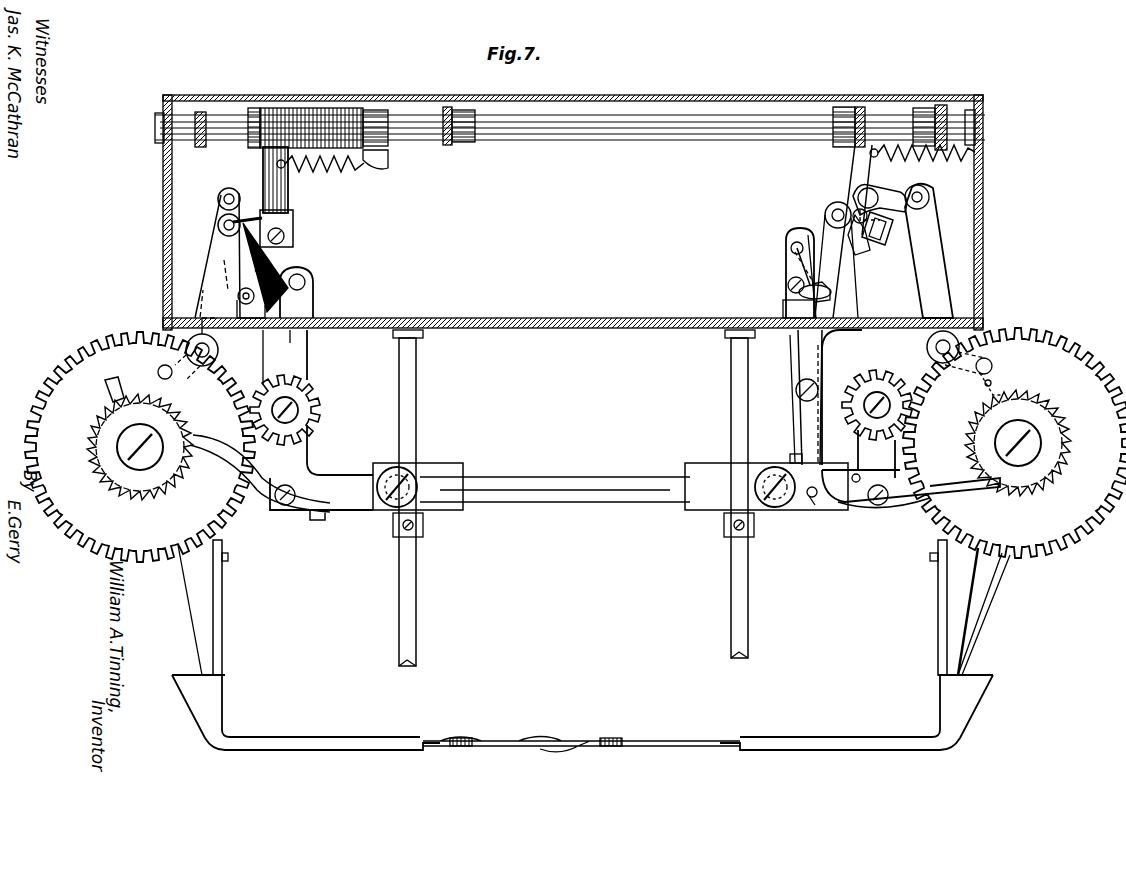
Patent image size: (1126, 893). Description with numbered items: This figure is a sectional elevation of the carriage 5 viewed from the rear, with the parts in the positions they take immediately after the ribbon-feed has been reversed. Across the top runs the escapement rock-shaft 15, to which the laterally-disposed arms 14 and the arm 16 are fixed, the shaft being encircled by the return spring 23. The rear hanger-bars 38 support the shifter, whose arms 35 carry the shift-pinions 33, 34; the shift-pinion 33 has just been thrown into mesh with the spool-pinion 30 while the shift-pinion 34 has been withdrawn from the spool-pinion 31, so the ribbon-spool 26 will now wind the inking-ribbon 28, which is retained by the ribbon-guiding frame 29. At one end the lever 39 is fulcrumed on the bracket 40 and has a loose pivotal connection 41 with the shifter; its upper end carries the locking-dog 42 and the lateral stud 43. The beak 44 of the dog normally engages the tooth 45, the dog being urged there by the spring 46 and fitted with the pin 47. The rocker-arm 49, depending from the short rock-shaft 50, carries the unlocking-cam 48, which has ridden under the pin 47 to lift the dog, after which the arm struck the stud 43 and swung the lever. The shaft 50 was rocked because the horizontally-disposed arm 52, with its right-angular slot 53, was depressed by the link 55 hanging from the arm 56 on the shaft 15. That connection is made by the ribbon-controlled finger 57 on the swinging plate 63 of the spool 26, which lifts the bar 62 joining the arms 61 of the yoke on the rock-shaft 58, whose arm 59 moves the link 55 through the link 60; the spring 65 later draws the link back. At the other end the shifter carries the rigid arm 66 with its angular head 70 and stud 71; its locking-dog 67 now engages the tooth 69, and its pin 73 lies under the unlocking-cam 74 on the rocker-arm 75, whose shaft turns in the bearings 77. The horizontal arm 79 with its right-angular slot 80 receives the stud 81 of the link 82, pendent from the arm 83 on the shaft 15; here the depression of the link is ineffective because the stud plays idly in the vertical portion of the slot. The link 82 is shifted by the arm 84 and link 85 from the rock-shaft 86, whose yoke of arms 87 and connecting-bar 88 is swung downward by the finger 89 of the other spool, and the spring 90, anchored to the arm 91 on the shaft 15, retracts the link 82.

The carriage 5 is at (573, 212).
The laterally-disposed arms 14 is at (198, 148).
The rock-shaft 15 is at (620, 128).
The arm 16 is at (447, 146).
The spring 23 is at (318, 108).
The ribbon-spool 26 is at (990, 615).
The inking-ribbon 28 is at (572, 752).
The ribbon-guiding frame 29 is at (792, 737).
The spool-pinion 30 is at (1014, 435).
The spool-pinion 31 is at (95, 338).
The shift-pinion 33 is at (887, 375).
The shift-pinion 34 is at (320, 412).
The arms 35 is at (310, 453).
The rear hanger-bars 38 is at (418, 425).
The lever 39 is at (800, 413).
The bracket 40 is at (795, 358).
The pivotal connection 41 is at (810, 508).
The locking-dog 42 is at (786, 288).
The lateral stud 43 is at (790, 270).
The beak 44 is at (832, 291).
The tooth 45 is at (850, 331).
The spring 46 is at (790, 252).
The laterally-extending pin 47 is at (812, 282).
The unlocking-cam 48 is at (788, 336).
The rocker-arm 49 is at (828, 225).
The rock-shaft 50 is at (834, 208).
The horizontally-disposed arm 52 is at (870, 246).
The right-angular slot 53 is at (885, 228).
The link 55 is at (860, 168).
The arm 56 is at (866, 142).
The ribbon-controlled finger 57 is at (980, 380).
The rock-shaft 58 is at (927, 340).
The arm 59 is at (925, 228).
The link 60 is at (890, 196).
The arms 61 is at (985, 345).
The bar 62 is at (992, 360).
The swinging plate 63 is at (90, 433).
The spring 65 is at (922, 162).
The vertically-disposed arm 66 is at (308, 352).
The locking-dog 67 is at (316, 298).
The tooth 69 is at (254, 357).
The angular head 70 is at (244, 292).
The laterally-disposed stud 71 is at (243, 300).
The pin 73 is at (263, 281).
The unlocking-cam 74 is at (292, 341).
The rocker-arm 75 is at (265, 262).
The bearings 77 is at (222, 262).
The horizontal arm 79 is at (293, 224).
The right-angular slot 80 is at (268, 217).
The stud 81 is at (290, 238).
The link 82 is at (286, 177).
The arm 83 is at (255, 147).
The arm 84 is at (212, 248).
The link 85 is at (240, 198).
The rock-shaft 86 is at (203, 367).
The arms 87 is at (178, 350).
The connecting-bar 88 is at (163, 365).
The finger 89 is at (106, 390).
The spring 90 is at (320, 174).
The arm 91 is at (388, 164).